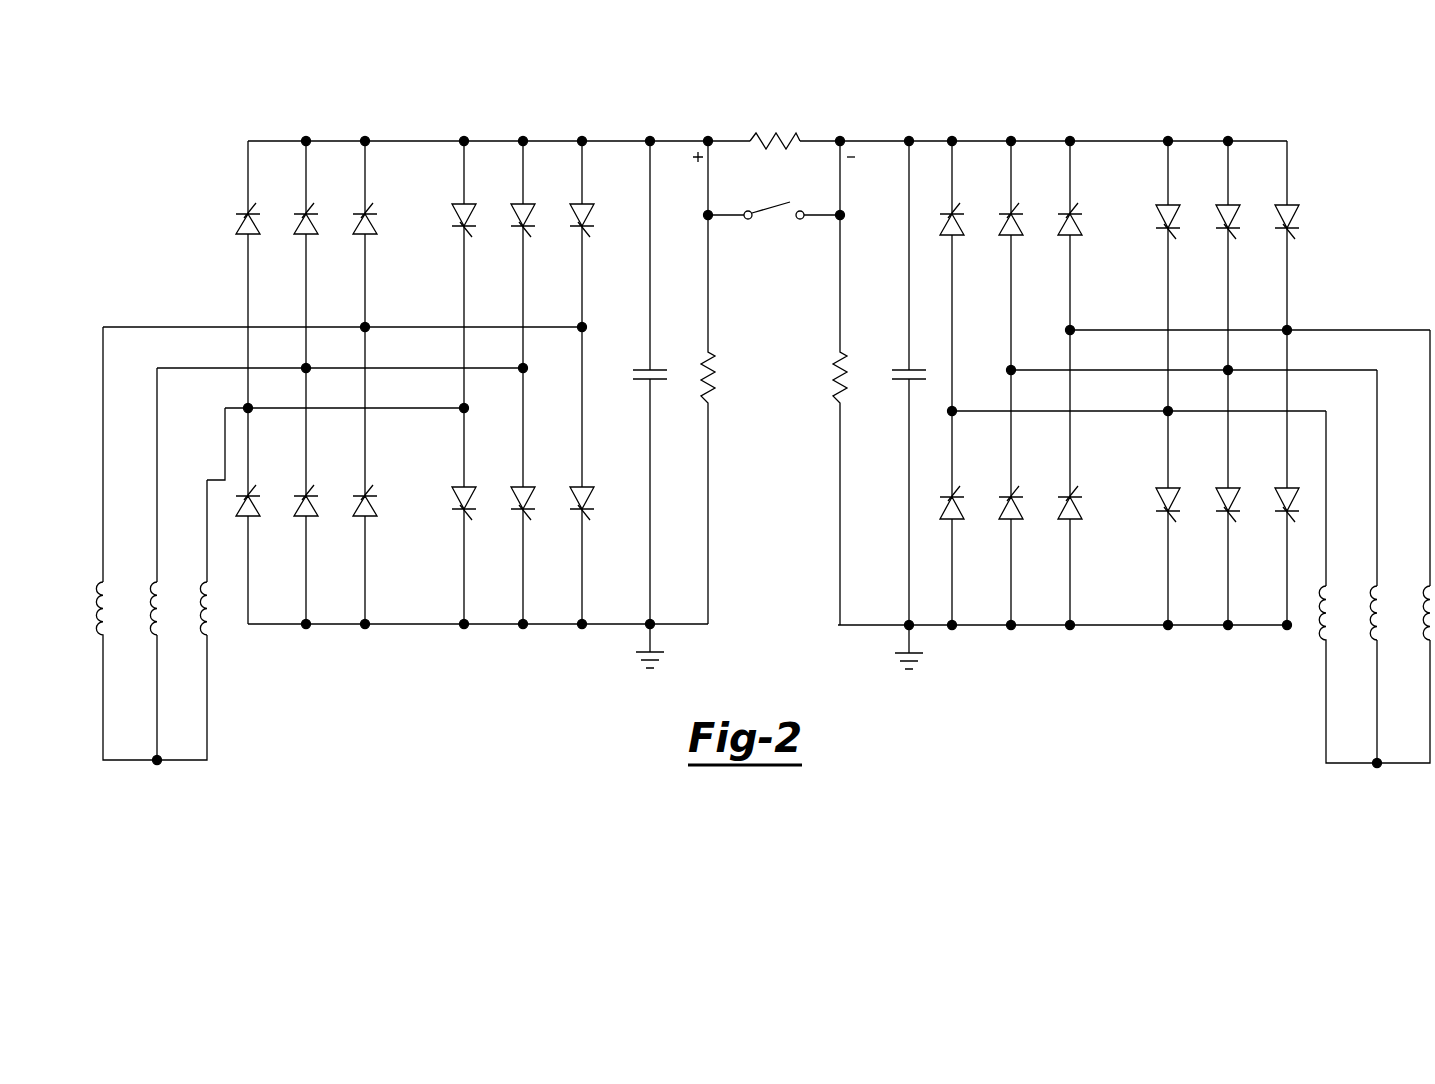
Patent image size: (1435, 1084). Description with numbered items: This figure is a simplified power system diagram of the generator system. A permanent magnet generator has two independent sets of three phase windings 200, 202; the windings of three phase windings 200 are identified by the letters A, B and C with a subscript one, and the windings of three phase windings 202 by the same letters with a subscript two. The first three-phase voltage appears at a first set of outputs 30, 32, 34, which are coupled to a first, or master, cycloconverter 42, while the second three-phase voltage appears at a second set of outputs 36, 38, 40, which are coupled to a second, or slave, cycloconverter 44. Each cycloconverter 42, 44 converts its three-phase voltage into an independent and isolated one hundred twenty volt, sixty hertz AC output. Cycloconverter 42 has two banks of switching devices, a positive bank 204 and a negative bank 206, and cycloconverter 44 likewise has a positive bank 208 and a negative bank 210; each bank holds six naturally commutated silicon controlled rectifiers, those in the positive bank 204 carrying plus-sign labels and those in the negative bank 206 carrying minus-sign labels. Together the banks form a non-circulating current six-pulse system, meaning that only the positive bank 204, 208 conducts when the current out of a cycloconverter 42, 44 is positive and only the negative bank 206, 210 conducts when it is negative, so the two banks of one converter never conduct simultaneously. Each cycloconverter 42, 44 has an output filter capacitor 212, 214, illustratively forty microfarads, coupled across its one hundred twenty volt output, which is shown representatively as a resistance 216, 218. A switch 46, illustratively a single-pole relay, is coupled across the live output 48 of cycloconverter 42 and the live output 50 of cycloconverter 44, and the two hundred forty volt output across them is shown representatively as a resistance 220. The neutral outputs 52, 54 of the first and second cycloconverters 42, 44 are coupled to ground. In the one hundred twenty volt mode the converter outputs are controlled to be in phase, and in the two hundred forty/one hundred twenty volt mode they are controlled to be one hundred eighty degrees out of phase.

The first set of outputs 30 is at (137, 327).
The first set of outputs 32 is at (197, 368).
The first set of outputs 34 is at (218, 480).
The second set of outputs 36 is at (1306, 411).
The second set of outputs 38 is at (1355, 370).
The second set of outputs 40 is at (1413, 330).
The first (Master) AC power converter 42 is at (414, 645).
The second (Slave) AC power converter 44 is at (1126, 645).
The switch 46 is at (780, 234).
The live output 48 is at (706, 136).
The live output 50 is at (842, 138).
The neutral output 52 is at (648, 626).
The neutral output 54 is at (908, 627).
The three phase windings 200 is at (134, 790).
The three phase windings 202 is at (1392, 802).
The positive bank 204 is at (390, 210).
The negative bank 206 is at (437, 197).
The positive bank 208 is at (1085, 276).
The negative bank 210 is at (1151, 259).
The output filter capacitor 212 is at (655, 365).
The output filter capacitor 214 is at (912, 365).
The 120 VAC output 216 is at (706, 385).
The 120 VAC output 218 is at (842, 385).
The 240 VAC output 220 is at (775, 150).